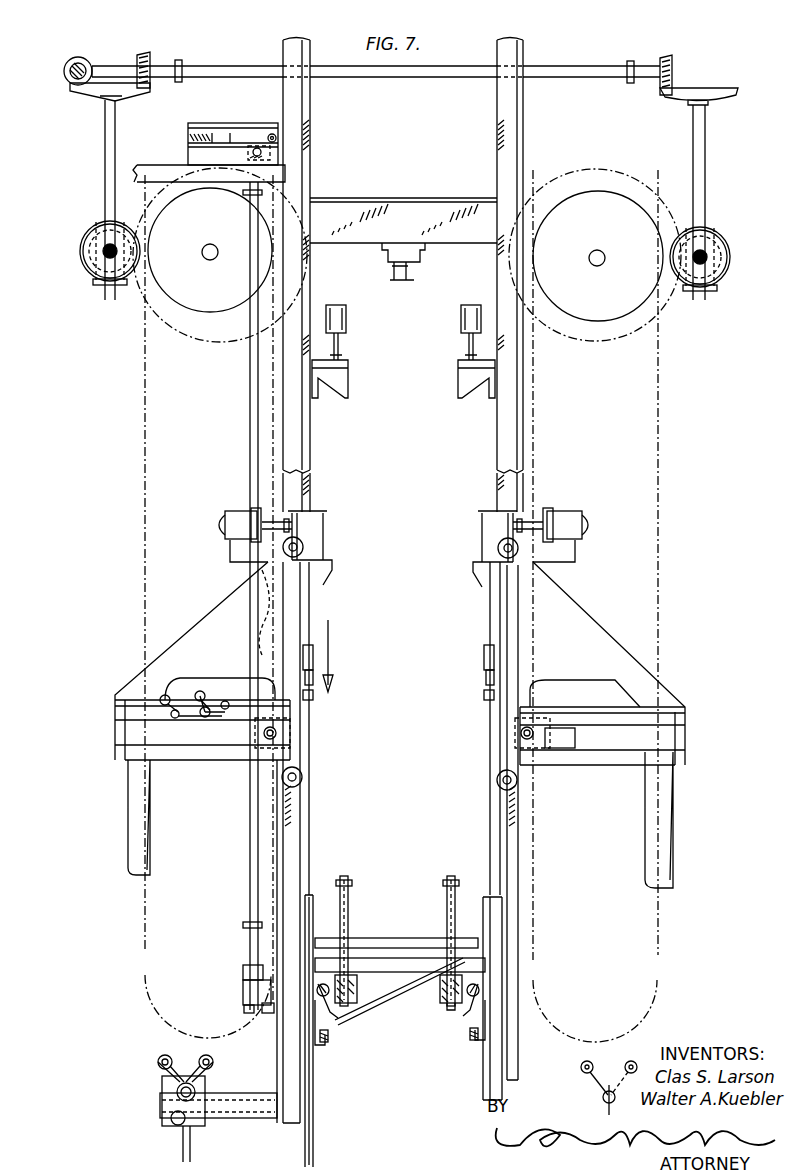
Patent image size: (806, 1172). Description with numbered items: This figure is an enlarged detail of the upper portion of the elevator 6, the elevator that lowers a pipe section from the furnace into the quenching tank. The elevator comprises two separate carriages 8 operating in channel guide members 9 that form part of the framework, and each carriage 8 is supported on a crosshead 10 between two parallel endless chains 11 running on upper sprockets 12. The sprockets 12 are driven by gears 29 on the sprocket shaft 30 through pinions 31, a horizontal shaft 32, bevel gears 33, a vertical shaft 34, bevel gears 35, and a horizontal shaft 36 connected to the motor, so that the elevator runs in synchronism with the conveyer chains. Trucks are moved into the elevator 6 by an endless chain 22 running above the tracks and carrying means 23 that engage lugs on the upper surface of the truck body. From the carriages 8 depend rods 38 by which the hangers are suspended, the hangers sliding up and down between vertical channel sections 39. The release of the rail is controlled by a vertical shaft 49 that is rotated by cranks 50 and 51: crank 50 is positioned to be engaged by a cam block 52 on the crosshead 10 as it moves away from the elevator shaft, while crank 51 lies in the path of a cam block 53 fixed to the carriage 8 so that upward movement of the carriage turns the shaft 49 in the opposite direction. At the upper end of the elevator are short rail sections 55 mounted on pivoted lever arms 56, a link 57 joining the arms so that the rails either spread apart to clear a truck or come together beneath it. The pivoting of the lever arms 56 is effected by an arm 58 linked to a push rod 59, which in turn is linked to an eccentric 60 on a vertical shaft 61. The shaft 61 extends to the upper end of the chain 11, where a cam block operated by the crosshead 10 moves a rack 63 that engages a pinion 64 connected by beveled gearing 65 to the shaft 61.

The elevator 6 is at (402, 840).
The carriage 8 is at (222, 605).
The channel guide member 9 is at (310, 490).
The crosshead 10 is at (262, 733).
The endless chain 11 is at (145, 443).
The upper sprocket 12 is at (190, 313).
The endless chain 22 is at (440, 997).
The engaging means 23 is at (449, 1010).
The gear 29 is at (140, 305).
The sprocket shaft 30 is at (211, 245).
The pinion 31 is at (93, 257).
The horizontal shaft 32 is at (403, 248).
The bevel gears 33 is at (100, 284).
The vertical shaft 34 is at (105, 173).
The bevel gears 35 is at (437, 82).
The horizontal shaft 36 is at (66, 80).
The depending rod 38 is at (490, 836).
The vertical channel section 39 is at (309, 1099).
The vertical shaft 49 is at (183, 1143).
The crank 50 is at (210, 1066).
The crank 51 is at (160, 1068).
The cam block 52 is at (268, 762).
The cam block 53 is at (155, 862).
The short rail section 55 is at (326, 1045).
The pivoted lever arm 56 is at (330, 1040).
The link 57 is at (392, 1005).
The arm 58 is at (338, 1019).
The push rod 59 is at (270, 1015).
The eccentric 60 is at (244, 1012).
The vertical shaft 61 is at (248, 865).
The rack 63 is at (245, 135).
The pinion 64 is at (252, 153).
The beveled gearing 65 is at (272, 158).